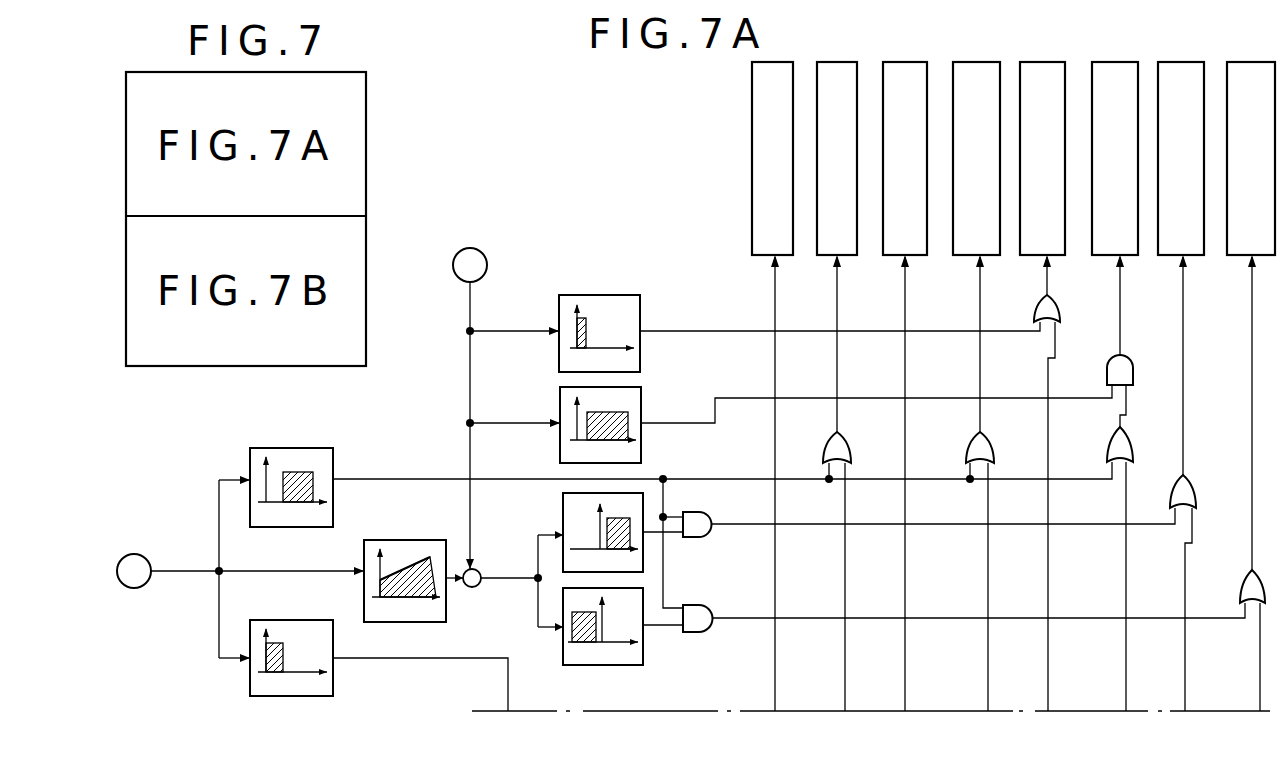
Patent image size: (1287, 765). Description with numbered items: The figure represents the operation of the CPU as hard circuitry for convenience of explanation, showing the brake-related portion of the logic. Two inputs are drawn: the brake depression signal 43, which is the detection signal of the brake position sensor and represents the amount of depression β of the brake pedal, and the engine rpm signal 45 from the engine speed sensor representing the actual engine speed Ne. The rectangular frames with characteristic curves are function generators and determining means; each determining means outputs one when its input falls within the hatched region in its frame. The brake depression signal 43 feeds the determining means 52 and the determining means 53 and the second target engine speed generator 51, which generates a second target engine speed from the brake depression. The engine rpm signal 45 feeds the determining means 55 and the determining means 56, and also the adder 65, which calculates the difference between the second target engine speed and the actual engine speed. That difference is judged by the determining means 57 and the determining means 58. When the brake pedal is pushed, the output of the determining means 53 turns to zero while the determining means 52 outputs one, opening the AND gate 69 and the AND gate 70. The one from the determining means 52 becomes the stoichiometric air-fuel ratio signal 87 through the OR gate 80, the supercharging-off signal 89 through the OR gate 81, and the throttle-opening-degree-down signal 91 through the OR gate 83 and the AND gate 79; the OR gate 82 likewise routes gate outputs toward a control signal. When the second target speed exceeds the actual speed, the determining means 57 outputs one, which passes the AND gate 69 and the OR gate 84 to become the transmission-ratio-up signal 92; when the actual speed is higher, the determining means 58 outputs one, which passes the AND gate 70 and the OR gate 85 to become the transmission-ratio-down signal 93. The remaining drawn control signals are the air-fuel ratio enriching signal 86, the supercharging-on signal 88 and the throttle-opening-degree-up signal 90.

The brake depression signal 43 is at (145, 584).
The engine rpm signal 45 is at (488, 262).
The second target engine speed generator 51 is at (428, 540).
The determining means 52 is at (333, 452).
The determining means 53 is at (317, 606).
The determining means 55 is at (625, 295).
The determining means 56 is at (641, 400).
The determining means 57 is at (563, 512).
The determining means 58 is at (643, 650).
The adder 65 is at (479, 586).
The AND gate 69 is at (700, 512).
The AND gate 70 is at (700, 605).
The AND gate 79 is at (1131, 361).
The OR gate 80 is at (830, 440).
The OR gate 81 is at (972, 440).
The OR gate 82 is at (1040, 302).
The OR gate 83 is at (1110, 440).
The OR gate 84 is at (1193, 487).
The OR gate 85 is at (1241, 588).
The air-fuel ratio enriching signal 86 is at (783, 62).
The stoichiometric air-fuel ratio signal 87 is at (845, 62).
The supercharging-on signal 88 is at (910, 62).
The supercharging-off signal 89 is at (980, 62).
The throttle-opening-degree-up signal 90 is at (1050, 62).
The throttle-opening-degree-down signal 91 is at (1122, 62).
The transmission-ratio-up signal 92 is at (1187, 62).
The transmission-ratio-down signal 93 is at (1252, 62).